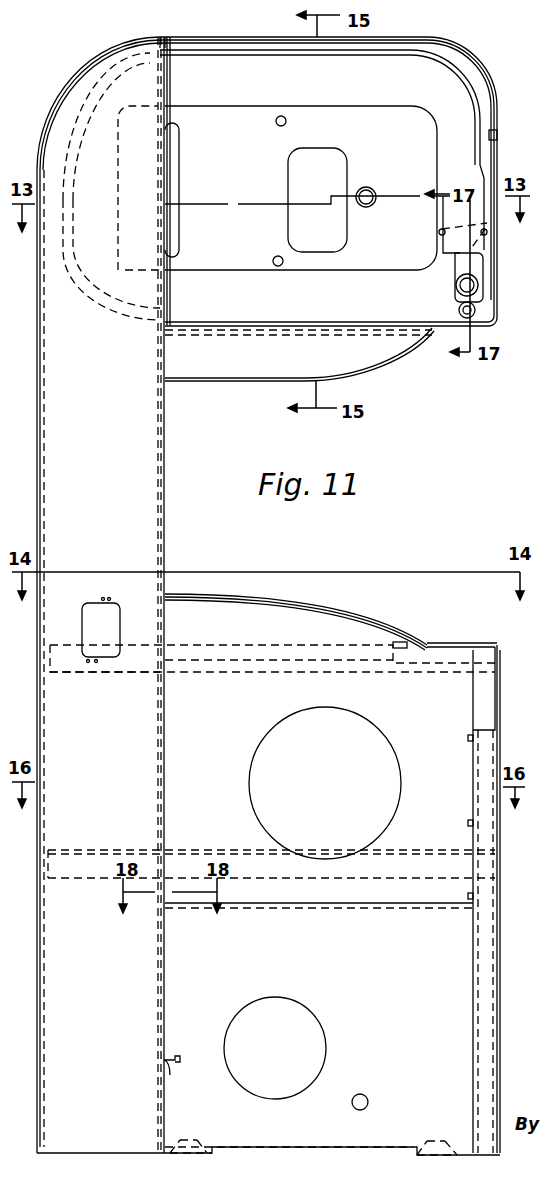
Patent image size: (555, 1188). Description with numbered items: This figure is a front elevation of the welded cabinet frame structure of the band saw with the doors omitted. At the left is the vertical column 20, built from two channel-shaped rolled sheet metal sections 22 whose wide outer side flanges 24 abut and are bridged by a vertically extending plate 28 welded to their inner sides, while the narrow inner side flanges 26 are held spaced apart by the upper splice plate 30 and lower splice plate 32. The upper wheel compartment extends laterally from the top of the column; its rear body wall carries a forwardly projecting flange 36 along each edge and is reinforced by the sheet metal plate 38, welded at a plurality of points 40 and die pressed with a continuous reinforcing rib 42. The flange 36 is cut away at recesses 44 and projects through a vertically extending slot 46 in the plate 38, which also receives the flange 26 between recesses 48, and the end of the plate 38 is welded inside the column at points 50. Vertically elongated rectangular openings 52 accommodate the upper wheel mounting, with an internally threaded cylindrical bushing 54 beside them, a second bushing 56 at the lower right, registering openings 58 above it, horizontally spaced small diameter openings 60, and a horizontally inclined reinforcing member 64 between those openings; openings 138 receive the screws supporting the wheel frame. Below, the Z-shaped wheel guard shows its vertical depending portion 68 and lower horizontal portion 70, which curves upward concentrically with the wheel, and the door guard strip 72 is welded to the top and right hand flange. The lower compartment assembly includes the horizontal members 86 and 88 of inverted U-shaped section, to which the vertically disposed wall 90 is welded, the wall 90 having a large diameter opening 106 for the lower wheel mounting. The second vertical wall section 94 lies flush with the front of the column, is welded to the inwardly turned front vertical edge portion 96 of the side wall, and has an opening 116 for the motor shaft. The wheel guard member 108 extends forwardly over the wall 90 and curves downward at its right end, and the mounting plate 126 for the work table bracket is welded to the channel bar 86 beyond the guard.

The vertical column 20 is at (168, 513).
The rolled sheet metal sections 22 is at (102, 460).
The outer side flanges 24 is at (40, 385).
The inner side flanges 26 is at (160, 128).
The vertically extending plate 28 is at (42, 345).
The upper splice plate 30 is at (160, 284).
The lower splice plate 32 is at (158, 667).
The forwardly projecting flange 36 is at (172, 218).
The sheet metal plate 38 is at (312, 188).
The welding points 40 is at (335, 58).
The reinforcing rib 42 is at (215, 106).
The recesses 44 is at (172, 45).
The vertically extending slot 46 is at (174, 148).
The recesses 48 is at (164, 42).
The welding points 50 is at (75, 97).
The rectangular openings 52 is at (374, 190).
The internally threaded cylindrical bushing 54 is at (368, 207).
The internally threaded bushing 56 is at (472, 316).
The registering openings 58 is at (478, 283).
The small diameter openings 60 is at (439, 232).
The reinforcing member 64 is at (453, 277).
The vertical depending portion 68 is at (298, 346).
The lower horizontal portion 70 is at (270, 378).
The door guard strip 72 is at (432, 39).
The horizontal member 86 is at (110, 665).
The horizontal member 88 is at (325, 850).
The vertically disposed wall 90 is at (272, 677).
The second vertical wall section 94 is at (319, 1025).
The inwardly turned front vertical edge portion 96 is at (482, 768).
The large diameter opening 106 is at (392, 748).
The wheel guard member 108 is at (370, 620).
The opening 116 is at (300, 1000).
The mounting plate 126 is at (497, 645).
The openings 138 is at (282, 114).